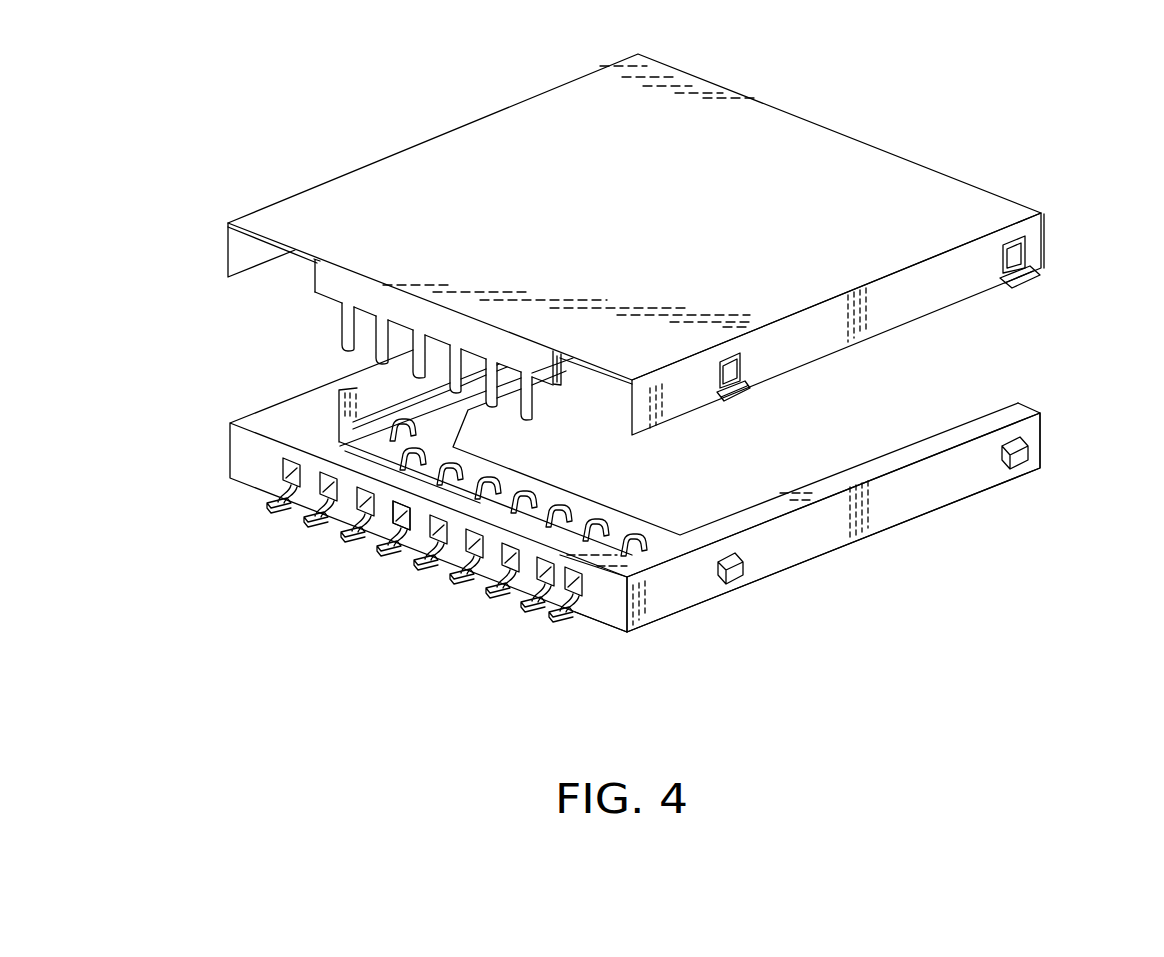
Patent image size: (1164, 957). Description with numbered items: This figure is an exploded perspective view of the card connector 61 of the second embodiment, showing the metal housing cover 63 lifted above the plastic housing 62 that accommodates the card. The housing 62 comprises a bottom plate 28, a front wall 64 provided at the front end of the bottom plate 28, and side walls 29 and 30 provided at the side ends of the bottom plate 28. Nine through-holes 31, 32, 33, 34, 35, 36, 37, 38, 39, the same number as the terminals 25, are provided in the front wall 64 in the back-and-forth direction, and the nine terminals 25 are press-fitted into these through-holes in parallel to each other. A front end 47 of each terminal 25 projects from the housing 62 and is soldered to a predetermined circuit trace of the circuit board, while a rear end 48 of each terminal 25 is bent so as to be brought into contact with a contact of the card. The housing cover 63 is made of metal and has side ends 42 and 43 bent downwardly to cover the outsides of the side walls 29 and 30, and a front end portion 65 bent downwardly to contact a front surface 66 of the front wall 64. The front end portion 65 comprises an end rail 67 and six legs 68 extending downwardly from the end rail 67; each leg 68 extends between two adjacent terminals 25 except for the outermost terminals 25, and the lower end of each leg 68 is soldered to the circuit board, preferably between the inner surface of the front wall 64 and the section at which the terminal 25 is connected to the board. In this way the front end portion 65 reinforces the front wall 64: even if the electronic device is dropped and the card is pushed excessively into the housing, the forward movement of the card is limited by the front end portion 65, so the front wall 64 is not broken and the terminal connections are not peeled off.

The terminals 25 is at (552, 621).
The bottom plate 28 is at (637, 530).
The side wall 29 is at (953, 485).
The side wall 30 is at (372, 380).
The through-hole 31 is at (275, 487).
The through-hole 32 is at (310, 500).
The through-hole 33 is at (347, 513).
The through-hole 34 is at (380, 527).
The through-hole 35 is at (410, 552).
The through-hole 36 is at (442, 562).
The through-hole 37 is at (478, 580).
The through-hole 38 is at (514, 598).
The through-hole 39 is at (550, 607).
The side end 42 is at (913, 305).
The side end 43 is at (243, 259).
The front end 47 is at (384, 550).
The rear end 48 is at (557, 511).
The card connector 61 is at (645, 244).
The housing 62 is at (599, 414).
The housing cover 63 is at (868, 141).
The front wall 64 is at (601, 585).
The front end portion 65 is at (314, 296).
The front surface 66 is at (248, 452).
The end rail 67 is at (322, 277).
The legs 68 is at (340, 327).